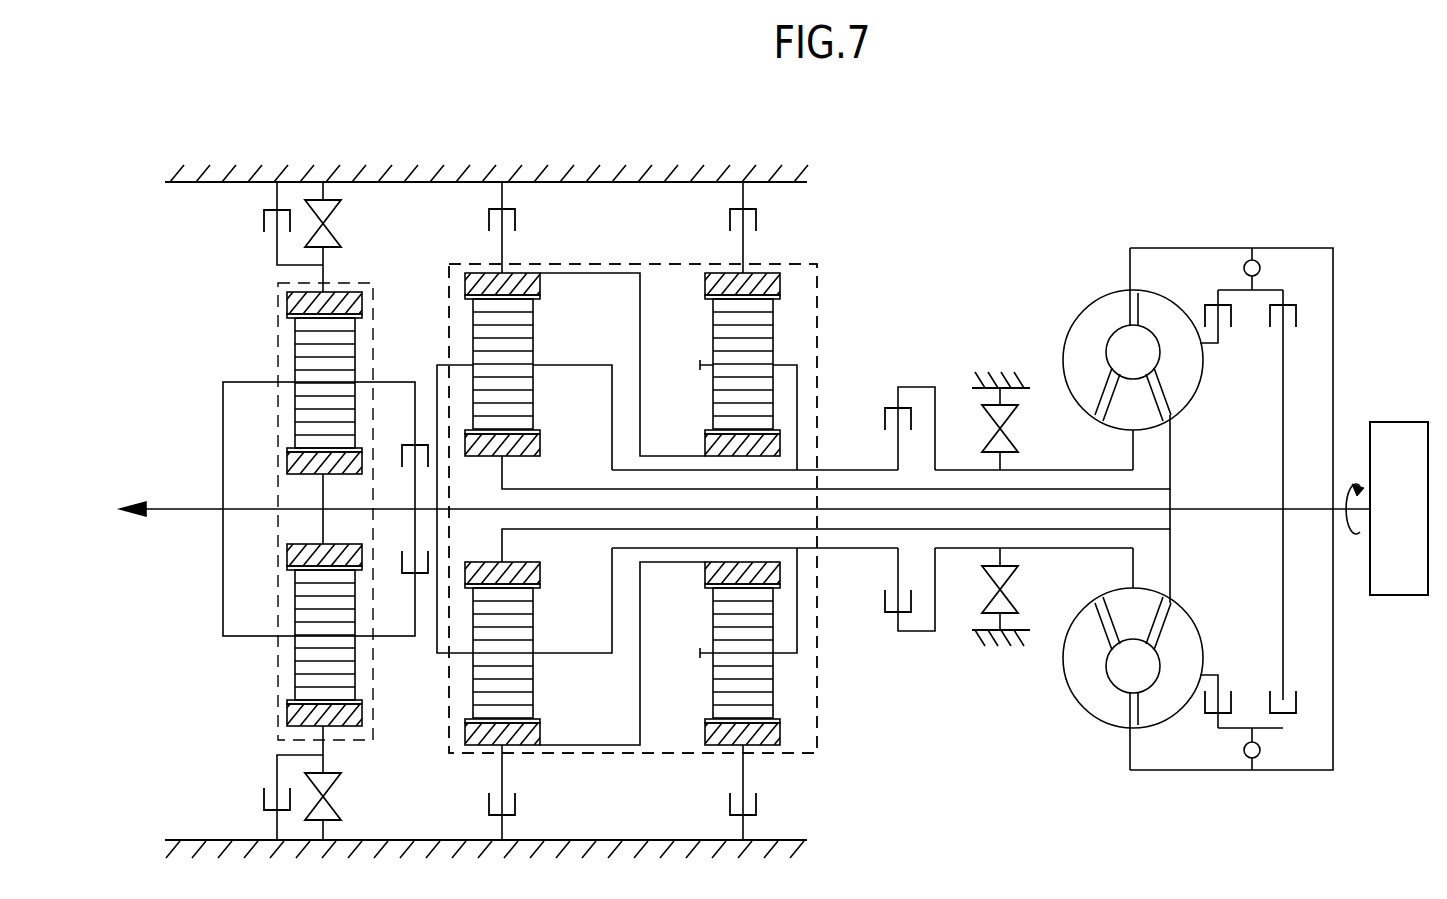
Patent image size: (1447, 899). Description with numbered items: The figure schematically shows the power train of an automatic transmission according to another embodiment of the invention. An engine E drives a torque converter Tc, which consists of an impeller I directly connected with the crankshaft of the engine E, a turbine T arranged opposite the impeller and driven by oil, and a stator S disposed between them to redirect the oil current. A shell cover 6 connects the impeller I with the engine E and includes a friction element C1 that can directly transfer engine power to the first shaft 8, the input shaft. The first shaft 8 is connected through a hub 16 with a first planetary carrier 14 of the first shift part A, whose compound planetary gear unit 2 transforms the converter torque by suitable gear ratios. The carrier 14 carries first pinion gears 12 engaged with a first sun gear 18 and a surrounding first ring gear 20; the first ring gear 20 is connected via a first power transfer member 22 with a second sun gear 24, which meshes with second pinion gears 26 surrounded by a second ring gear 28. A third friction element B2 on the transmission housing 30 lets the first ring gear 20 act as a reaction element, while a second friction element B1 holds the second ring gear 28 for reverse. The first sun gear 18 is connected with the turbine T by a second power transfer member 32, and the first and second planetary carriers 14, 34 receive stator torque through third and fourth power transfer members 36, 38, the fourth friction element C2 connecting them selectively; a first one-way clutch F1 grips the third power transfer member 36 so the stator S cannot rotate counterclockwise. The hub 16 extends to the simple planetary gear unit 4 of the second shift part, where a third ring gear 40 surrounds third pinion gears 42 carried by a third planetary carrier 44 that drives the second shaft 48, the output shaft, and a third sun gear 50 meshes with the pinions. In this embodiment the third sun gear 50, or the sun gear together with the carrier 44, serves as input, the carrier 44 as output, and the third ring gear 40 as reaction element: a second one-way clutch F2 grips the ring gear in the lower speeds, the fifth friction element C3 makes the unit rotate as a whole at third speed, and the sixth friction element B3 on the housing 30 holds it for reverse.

The transmission housing 30 is at (398, 170).
The sixth friction element B3 is at (274, 223).
The second one-way clutch F2 is at (342, 237).
The simple planetary gear unit 4 is at (278, 338).
The third ring gear 40 is at (365, 300).
The third pinion gears 42 is at (345, 357).
The third sun gear 50 is at (287, 468).
The third planetary carrier 44 is at (223, 393).
The second shaft (output shaft) 48 is at (178, 508).
The fifth friction element C3 is at (405, 492).
The first shaft (input shaft) 8 is at (1238, 508).
The third friction element B2 is at (522, 227).
The second friction element B1 is at (762, 227).
The compound planetary gear unit 2 is at (817, 297).
The first shift part A is at (828, 277).
The first ring gear 20 is at (540, 285).
The first pinion gears 12 is at (528, 335).
The first sun gear 18 is at (540, 445).
The second ring gear 28 is at (705, 283).
The second pinion gears 26 is at (717, 325).
The second sun gear 24 is at (705, 443).
The first planetary carrier 14 is at (600, 365).
The hub 16 is at (440, 490).
The first power transfer member 22 is at (615, 406).
The second planetary carrier 34 is at (792, 367).
The fourth power transfer member 38 is at (848, 470).
The fourth friction element C2 is at (897, 425).
The third power transfer member 36 is at (963, 470).
The first one-way clutch F1 is at (1014, 421).
The torque converter Tc is at (1152, 240).
The impeller I is at (1085, 338).
The turbine T is at (1195, 373).
The stator S is at (1118, 413).
The second power transfer member 32 is at (1168, 512).
The shell cover 6 is at (1232, 248).
The friction element C1 is at (1266, 509).
The engine E is at (1387, 508).